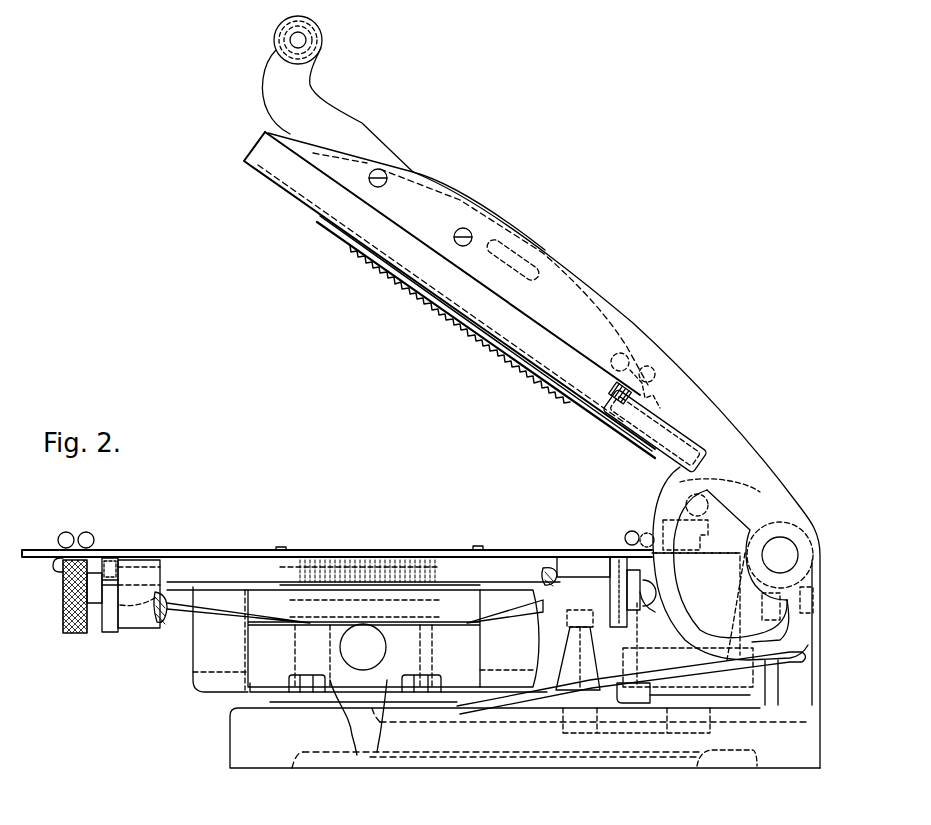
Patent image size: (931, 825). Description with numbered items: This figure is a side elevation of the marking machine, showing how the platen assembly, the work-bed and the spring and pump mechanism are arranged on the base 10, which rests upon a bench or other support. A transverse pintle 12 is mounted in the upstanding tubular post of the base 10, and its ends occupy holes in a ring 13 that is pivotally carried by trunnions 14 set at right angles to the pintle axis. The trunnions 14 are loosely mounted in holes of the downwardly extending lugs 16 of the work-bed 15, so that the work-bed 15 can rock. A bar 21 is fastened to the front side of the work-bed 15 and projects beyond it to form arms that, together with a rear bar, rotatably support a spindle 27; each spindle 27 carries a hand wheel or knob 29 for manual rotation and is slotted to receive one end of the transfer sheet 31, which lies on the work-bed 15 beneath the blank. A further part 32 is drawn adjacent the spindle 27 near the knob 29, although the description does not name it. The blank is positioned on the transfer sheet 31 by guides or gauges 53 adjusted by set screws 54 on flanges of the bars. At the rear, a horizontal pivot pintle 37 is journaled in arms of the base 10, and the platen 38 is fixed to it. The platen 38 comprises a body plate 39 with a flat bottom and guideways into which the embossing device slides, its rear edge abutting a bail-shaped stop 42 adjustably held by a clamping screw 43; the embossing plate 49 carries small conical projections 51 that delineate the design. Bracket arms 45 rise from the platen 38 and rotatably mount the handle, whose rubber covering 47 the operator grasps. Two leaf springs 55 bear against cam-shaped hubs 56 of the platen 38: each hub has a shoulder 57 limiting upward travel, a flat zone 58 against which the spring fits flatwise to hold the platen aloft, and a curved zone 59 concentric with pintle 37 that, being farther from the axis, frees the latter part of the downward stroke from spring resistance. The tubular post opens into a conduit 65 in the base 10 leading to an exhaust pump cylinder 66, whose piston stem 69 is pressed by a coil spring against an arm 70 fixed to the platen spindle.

The base 10 is at (233, 745).
The pintle 12 is at (363, 647).
The ring 13 is at (323, 641).
The trunnions 14 is at (192, 640).
The work-bed 15 is at (224, 566).
The lugs 16 is at (198, 693).
The bar 21 is at (110, 560).
The spindle 27 is at (97, 612).
The hand wheel or knob 29 is at (62, 614).
The transfer sheet 31 is at (453, 553).
The sleeve 32 is at (144, 630).
The pivot pintle 37 is at (781, 550).
The platen 38 is at (714, 404).
The body plate 39 is at (517, 325).
The stop 42 is at (683, 425).
The clamping screw 43 is at (648, 363).
The bracket arms 45 is at (316, 114).
The covering 47 is at (283, 48).
The embossing plate 49 is at (338, 226).
The conical projections 51 is at (448, 312).
The guides or gauges 53 is at (265, 548).
The set screws 54 is at (86, 531).
The leaf springs 55 is at (740, 714).
The cam-shaped hubs 56 is at (730, 564).
The shoulder 57 is at (797, 664).
The flat zone 58 is at (786, 658).
The curved zone 59 is at (643, 647).
The conduit 65 is at (350, 716).
The exhaust pump cylinder 66 is at (606, 623).
The stem 69 is at (667, 508).
The arm 70 is at (730, 473).